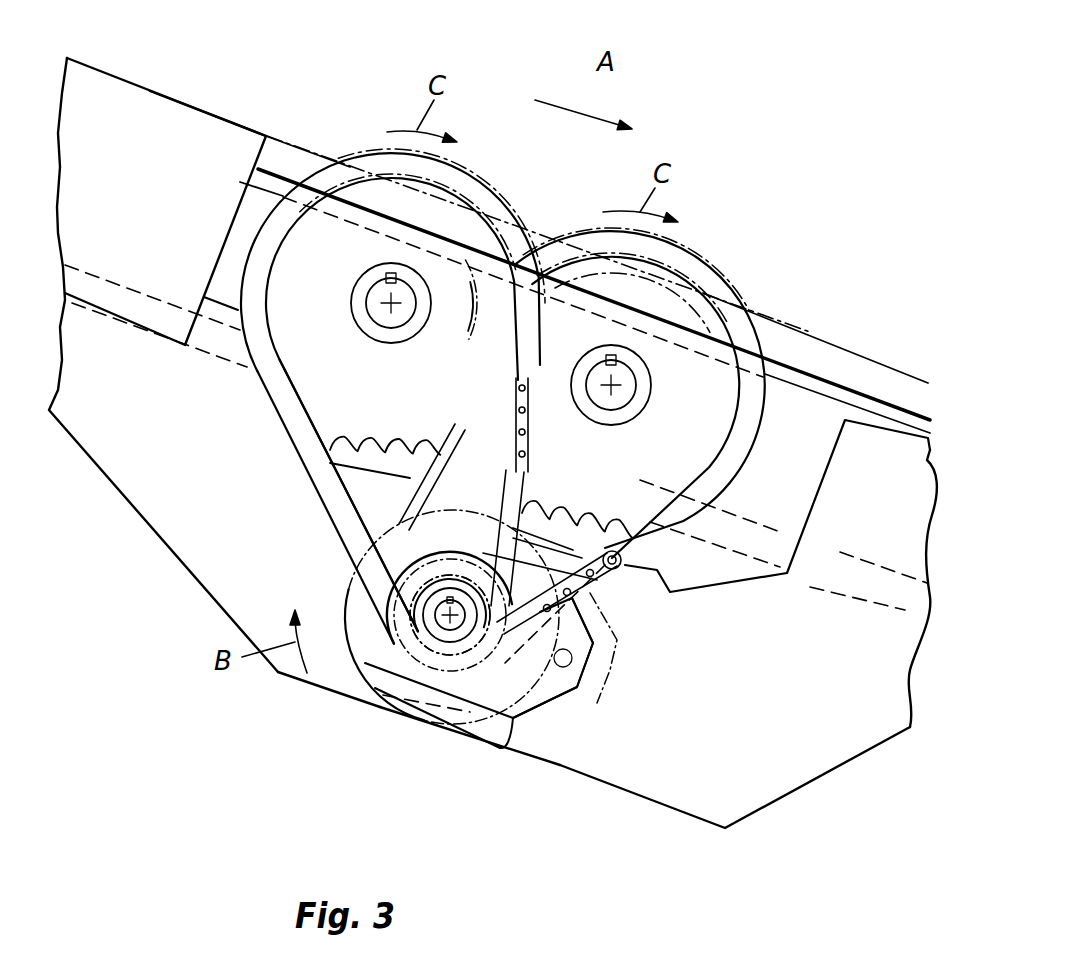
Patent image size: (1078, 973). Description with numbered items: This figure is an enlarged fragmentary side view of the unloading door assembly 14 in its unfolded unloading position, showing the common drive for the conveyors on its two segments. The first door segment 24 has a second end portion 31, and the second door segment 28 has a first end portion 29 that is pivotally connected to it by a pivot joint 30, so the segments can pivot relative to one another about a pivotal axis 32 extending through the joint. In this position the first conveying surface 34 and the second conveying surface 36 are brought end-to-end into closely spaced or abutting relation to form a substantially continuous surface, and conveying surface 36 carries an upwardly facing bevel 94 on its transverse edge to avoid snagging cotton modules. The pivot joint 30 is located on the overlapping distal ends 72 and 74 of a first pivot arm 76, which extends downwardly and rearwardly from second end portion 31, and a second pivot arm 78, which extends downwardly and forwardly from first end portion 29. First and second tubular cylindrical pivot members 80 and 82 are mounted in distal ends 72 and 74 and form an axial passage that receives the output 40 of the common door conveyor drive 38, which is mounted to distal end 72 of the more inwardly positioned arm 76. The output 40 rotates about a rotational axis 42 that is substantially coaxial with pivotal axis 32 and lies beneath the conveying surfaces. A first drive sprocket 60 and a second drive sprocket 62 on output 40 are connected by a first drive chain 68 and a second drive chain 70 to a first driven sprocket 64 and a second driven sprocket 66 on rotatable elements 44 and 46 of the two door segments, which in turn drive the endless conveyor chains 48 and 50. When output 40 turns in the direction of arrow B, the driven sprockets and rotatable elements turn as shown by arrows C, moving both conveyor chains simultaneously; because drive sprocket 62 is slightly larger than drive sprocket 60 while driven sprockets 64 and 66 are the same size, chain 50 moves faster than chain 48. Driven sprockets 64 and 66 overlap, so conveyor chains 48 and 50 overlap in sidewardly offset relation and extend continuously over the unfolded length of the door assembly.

The unloading door assembly 14 is at (150, 78).
The first door segment 24 is at (246, 124).
The second door segment 28 is at (863, 356).
The first end portion 29 is at (902, 373).
The pivot joint 30 is at (399, 716).
The second end portion 31 is at (211, 106).
The pivotal axis 32 is at (454, 628).
The first conveying surface 34 is at (282, 172).
The second conveying surface 36 is at (807, 369).
The common door conveyor drive 38 is at (366, 694).
The output 40 is at (440, 610).
The rotational axis 42 is at (470, 695).
The rotatable element 44 is at (373, 318).
The rotatable element 46 is at (618, 410).
The endless conveyor chain 48 is at (316, 153).
The endless conveyor chain 50 is at (765, 318).
The first drive sprocket 60 is at (360, 534).
The second drive sprocket 62 is at (328, 496).
The first driven sprocket 64 is at (385, 464).
The second driven sprocket 66 is at (612, 575).
The first drive chain 68 is at (297, 452).
The second drive chain 70 is at (714, 497).
The distal end 72 is at (315, 688).
The distal end 74 is at (432, 722).
The first pivot arm 76 is at (177, 557).
The second pivot arm 78 is at (643, 799).
The first tubular cylindrical pivot member 80 is at (520, 673).
The second tubular cylindrical pivot member 82 is at (636, 672).
The upwardly facing bevel 94 is at (578, 290).